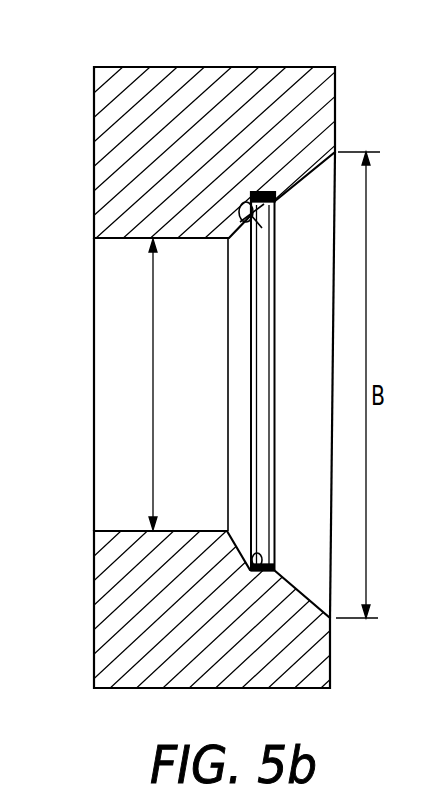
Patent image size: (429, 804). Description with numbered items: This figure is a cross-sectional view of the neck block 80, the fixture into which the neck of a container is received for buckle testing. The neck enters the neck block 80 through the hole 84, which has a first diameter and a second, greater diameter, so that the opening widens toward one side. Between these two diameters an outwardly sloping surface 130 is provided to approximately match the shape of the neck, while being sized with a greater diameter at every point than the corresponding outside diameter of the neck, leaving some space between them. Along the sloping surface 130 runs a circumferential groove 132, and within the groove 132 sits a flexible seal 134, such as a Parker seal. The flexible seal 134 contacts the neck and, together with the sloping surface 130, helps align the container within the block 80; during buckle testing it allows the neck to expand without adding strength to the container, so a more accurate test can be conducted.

The neck block 80 is at (84, 185).
The hole 84 is at (110, 472).
The outwardly sloping surface 130 is at (305, 178).
The circumferential groove 132 is at (259, 238).
The flexible seal 134 is at (262, 562).